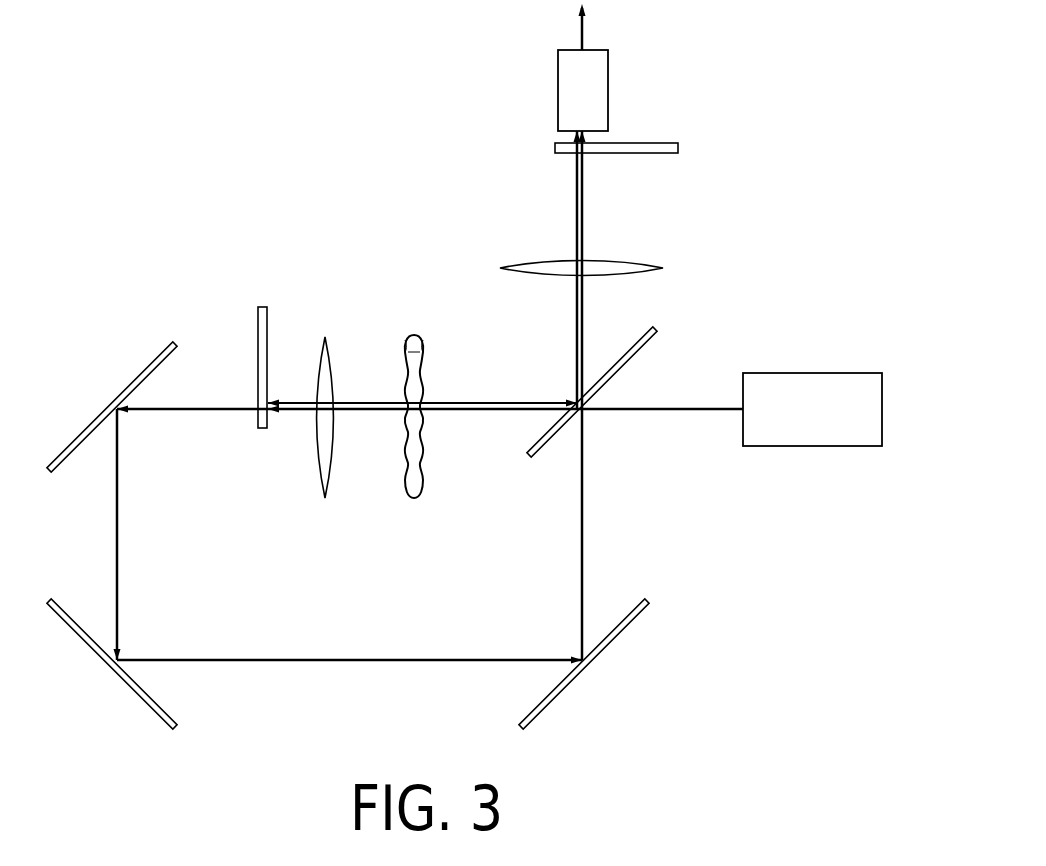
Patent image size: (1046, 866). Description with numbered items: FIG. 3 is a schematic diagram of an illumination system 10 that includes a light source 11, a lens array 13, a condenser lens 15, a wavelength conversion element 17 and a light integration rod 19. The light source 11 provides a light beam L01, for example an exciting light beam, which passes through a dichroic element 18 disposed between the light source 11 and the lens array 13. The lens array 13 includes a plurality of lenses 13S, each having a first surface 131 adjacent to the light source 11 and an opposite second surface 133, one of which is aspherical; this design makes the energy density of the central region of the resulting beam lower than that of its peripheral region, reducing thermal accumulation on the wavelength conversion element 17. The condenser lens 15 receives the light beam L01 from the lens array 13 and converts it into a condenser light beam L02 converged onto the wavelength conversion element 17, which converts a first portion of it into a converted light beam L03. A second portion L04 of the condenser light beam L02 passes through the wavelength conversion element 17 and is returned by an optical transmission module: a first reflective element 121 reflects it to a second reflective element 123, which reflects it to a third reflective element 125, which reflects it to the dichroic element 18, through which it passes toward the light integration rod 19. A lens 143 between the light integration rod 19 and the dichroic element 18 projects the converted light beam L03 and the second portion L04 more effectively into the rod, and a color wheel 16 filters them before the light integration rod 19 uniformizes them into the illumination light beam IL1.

The illumination system 10 is at (127, 139).
The light source 11 is at (810, 446).
The lens array 13 is at (414, 336).
The first surface 131 is at (423, 347).
The second surface 133 is at (405, 347).
The lens 13S is at (414, 355).
The condenser lens 15 is at (325, 338).
The color wheel 16 is at (660, 147).
The wavelength conversion element 17 is at (264, 307).
The dichroic element 18 is at (647, 340).
The light integration rod 19 is at (608, 80).
The first reflective element 121 is at (156, 362).
The second reflective element 123 is at (157, 708).
The third reflective element 125 is at (637, 620).
The lens 143 is at (627, 268).
The illumination light beam IL1 is at (584, 32).
The light beam L01 is at (672, 413).
The condenser light beam L02 is at (291, 415).
The converted light beam L03 is at (576, 190).
The second portion of the condenser light beam L04 is at (584, 212).